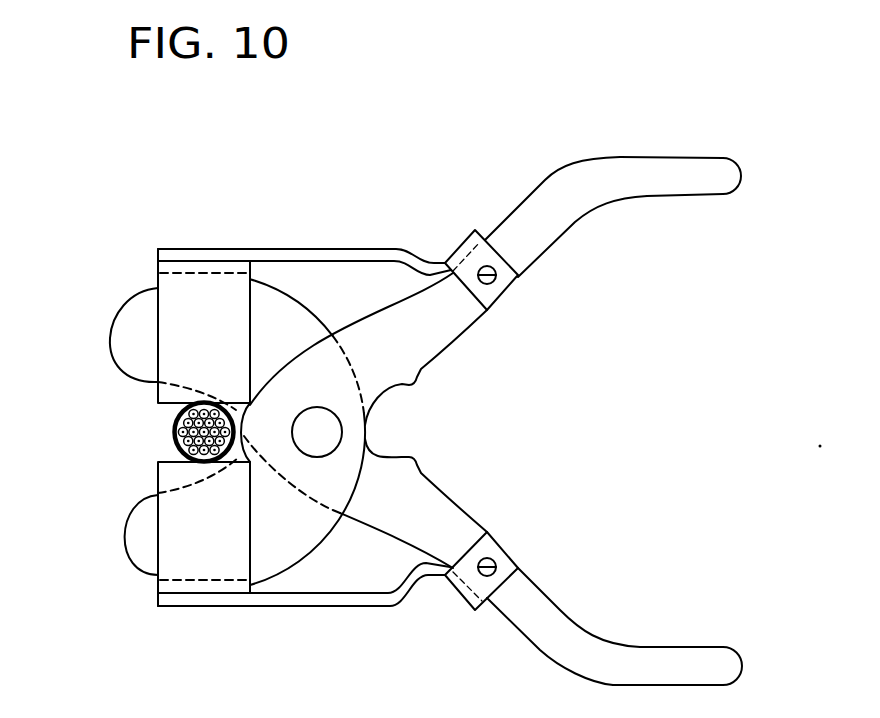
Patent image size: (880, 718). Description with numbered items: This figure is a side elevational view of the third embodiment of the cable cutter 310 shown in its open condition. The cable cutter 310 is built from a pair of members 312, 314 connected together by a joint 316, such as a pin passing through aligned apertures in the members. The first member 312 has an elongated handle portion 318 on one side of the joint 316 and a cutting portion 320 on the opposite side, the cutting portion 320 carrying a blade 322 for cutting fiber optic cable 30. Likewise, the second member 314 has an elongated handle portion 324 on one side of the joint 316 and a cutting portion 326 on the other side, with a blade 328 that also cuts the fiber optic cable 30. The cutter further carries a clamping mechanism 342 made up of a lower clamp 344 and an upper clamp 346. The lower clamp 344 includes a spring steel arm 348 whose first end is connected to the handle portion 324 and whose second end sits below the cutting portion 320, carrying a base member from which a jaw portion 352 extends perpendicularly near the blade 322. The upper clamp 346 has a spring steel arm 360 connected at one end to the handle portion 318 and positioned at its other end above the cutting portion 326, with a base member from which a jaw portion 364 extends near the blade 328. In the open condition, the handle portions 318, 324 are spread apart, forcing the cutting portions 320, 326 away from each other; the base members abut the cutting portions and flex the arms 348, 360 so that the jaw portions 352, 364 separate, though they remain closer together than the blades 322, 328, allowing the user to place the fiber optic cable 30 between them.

The cable cutter 310 is at (390, 151).
The first member 312 is at (525, 227).
The second member 314 is at (513, 612).
The joint 316 is at (327, 427).
The handle portion 318 is at (655, 172).
The handle portion 324 is at (632, 655).
The clamping mechanism 342 is at (274, 216).
The upper clamp 346 is at (240, 248).
The arm 360 is at (352, 248).
The cutting portion 326 is at (135, 308).
The jaw portion 364 is at (177, 332).
The blade 328 is at (137, 380).
The fiber optic cable 30 is at (173, 436).
The blade 322 is at (138, 496).
The jaw portion 352 is at (182, 524).
The cutting portion 320 is at (150, 545).
The lower clamp 344 is at (250, 607).
The arm 348 is at (372, 607).